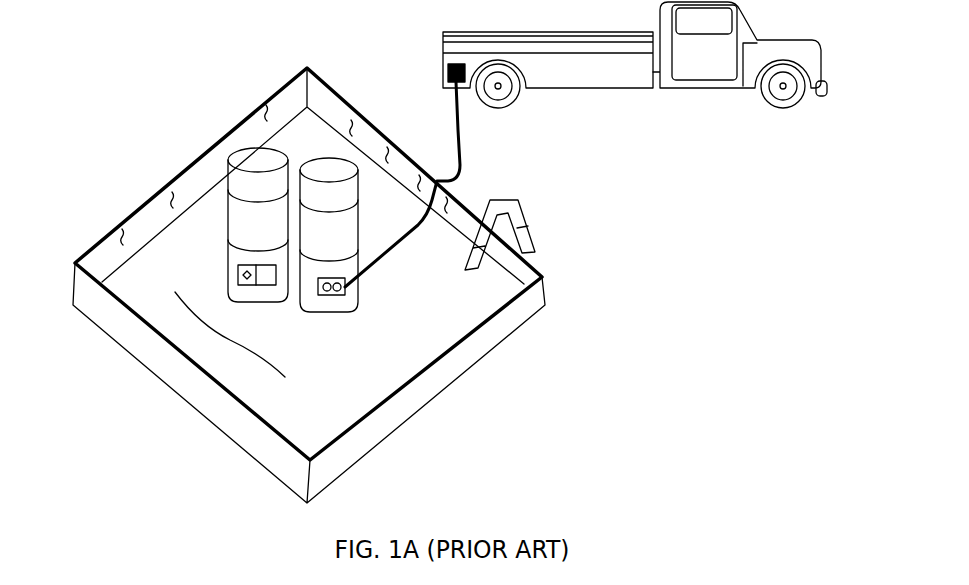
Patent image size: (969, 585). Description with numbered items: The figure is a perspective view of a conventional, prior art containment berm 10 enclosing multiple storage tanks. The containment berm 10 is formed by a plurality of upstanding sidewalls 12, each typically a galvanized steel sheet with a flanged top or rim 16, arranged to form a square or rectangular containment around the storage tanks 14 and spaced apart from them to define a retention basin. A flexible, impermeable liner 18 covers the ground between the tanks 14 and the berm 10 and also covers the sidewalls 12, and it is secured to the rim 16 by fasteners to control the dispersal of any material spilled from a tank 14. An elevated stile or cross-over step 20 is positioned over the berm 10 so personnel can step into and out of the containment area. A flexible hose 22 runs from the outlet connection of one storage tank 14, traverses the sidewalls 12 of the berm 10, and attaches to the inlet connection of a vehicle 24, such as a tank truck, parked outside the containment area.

The containment berm 10 is at (170, 90).
The sidewalls 12 is at (153, 360).
The storage tank 14 is at (293, 230).
The rim 16 is at (288, 75).
The liner 18 is at (150, 222).
The cross-over step 20 is at (503, 200).
The hose 22 is at (455, 127).
The vehicle 24 is at (630, 60).